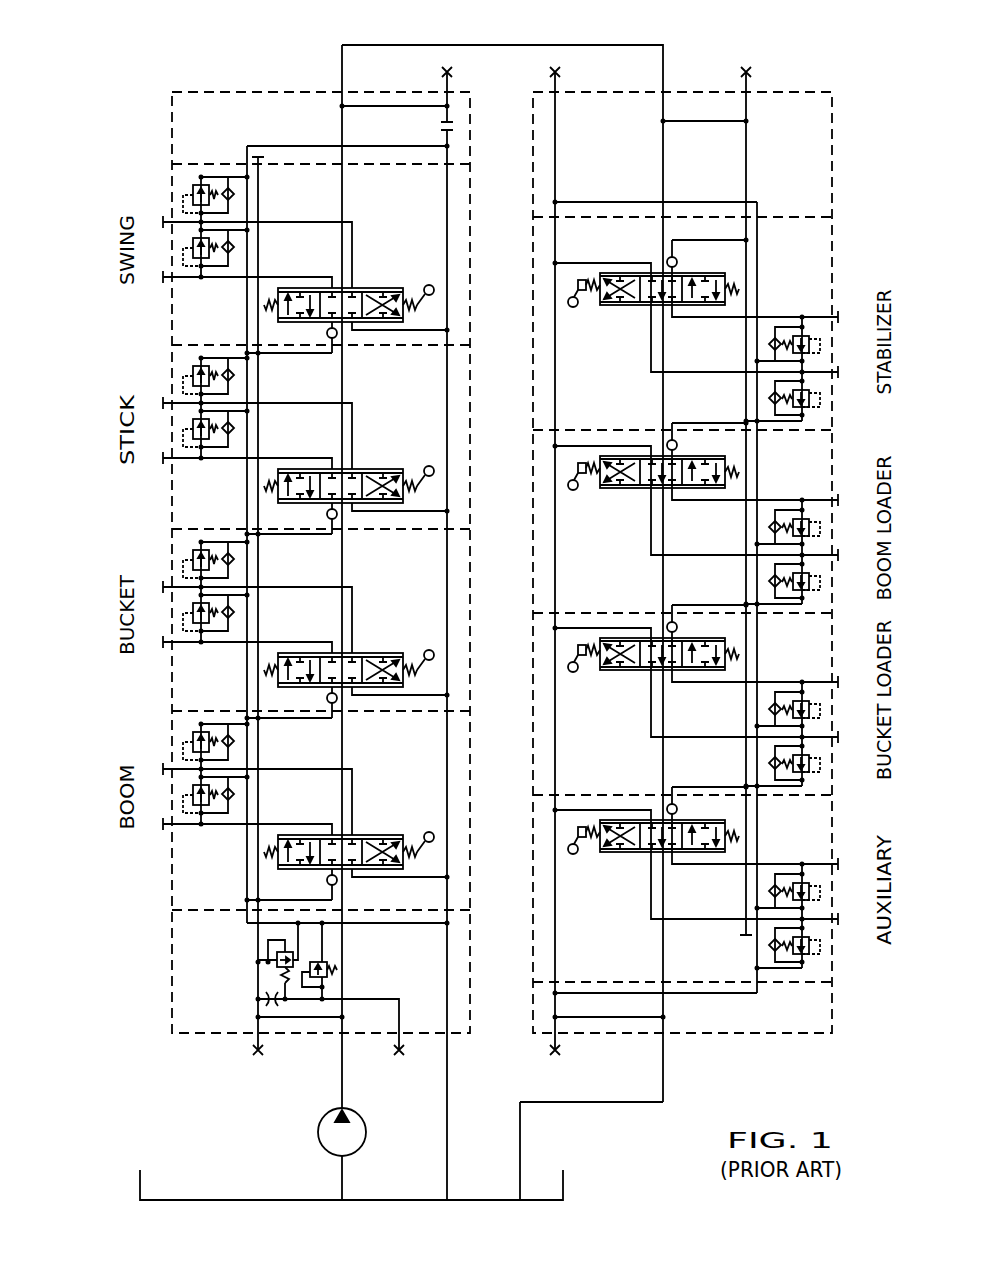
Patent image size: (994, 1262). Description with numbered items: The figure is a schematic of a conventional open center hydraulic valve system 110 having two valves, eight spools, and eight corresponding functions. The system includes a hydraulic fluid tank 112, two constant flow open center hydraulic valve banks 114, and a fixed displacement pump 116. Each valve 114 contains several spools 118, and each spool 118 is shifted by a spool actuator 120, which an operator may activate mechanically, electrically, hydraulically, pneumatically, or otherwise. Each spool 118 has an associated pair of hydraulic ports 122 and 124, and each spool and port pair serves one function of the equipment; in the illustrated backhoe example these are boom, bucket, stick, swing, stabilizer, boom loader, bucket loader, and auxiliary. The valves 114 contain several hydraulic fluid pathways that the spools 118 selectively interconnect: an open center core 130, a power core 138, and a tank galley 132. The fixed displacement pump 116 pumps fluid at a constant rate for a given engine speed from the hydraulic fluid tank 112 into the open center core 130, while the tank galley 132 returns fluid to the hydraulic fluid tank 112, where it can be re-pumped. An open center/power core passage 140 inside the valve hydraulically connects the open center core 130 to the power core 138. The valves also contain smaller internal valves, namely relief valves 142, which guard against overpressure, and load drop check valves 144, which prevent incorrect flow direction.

The open center hydraulic valve system 110 is at (294, 31).
The hydraulic fluid tank 112 is at (565, 1188).
The constant flow open center hydraulic valve bank 114 is at (170, 90).
The fixed displacement pump 116 is at (320, 1133).
The spool 118 is at (373, 283).
The spool actuator 120 is at (429, 286).
The hydraulic port 122 is at (165, 282).
The hydraulic port 124 is at (164, 220).
The open center core 130 is at (585, 44).
The tank galley 132 is at (373, 146).
The power core 138 is at (758, 257).
The open center/power core passage 140 is at (693, 120).
The relief valve 142 is at (201, 176).
The load drop check valve 144 is at (326, 338).